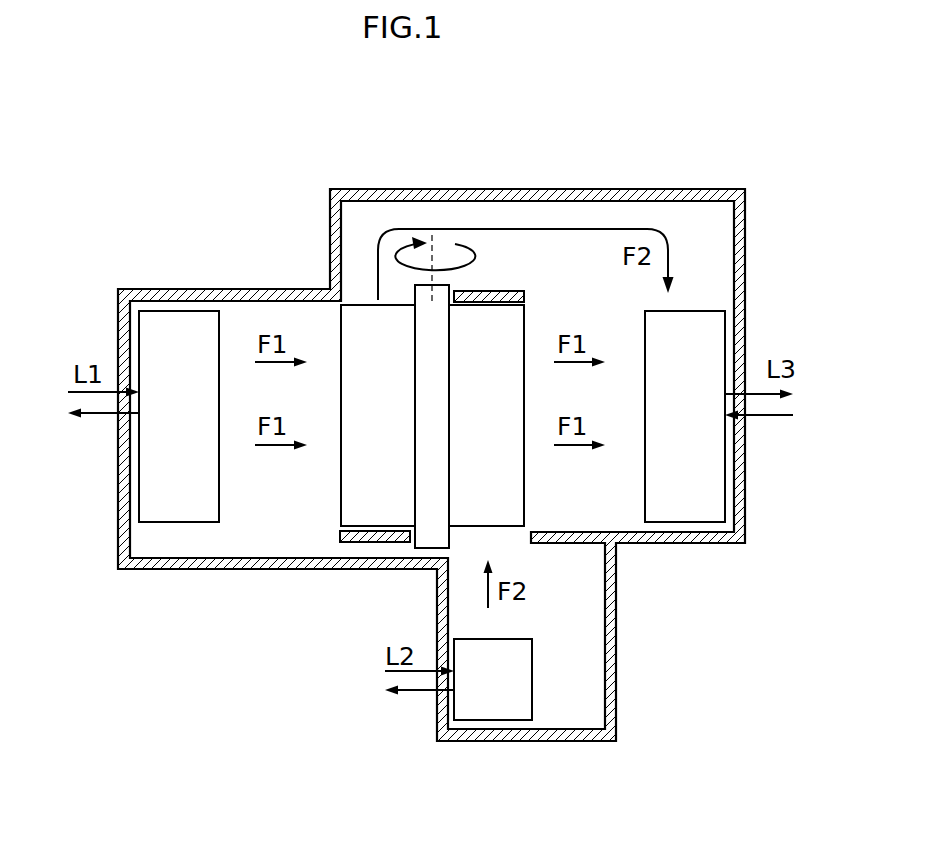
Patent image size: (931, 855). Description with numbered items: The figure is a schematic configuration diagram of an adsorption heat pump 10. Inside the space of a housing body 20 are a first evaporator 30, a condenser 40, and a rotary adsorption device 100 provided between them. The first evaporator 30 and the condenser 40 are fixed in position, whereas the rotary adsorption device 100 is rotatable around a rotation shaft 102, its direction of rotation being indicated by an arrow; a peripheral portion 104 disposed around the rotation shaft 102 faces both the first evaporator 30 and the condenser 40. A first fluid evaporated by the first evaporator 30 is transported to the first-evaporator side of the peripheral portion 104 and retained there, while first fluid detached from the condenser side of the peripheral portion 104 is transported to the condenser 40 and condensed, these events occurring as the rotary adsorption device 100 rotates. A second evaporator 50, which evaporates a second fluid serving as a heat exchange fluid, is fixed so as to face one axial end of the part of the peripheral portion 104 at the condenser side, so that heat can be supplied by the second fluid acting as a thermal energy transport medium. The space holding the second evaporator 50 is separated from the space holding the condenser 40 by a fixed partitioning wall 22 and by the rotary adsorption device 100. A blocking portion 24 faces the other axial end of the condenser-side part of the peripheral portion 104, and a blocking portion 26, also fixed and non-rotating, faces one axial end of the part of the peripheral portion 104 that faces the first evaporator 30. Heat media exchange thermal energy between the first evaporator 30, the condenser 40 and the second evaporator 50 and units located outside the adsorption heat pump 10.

The adsorption heat pump 10 is at (745, 110).
The housing body 20 is at (668, 197).
The partitioning wall 22 is at (575, 543).
The blocking portion 24 is at (513, 297).
The blocking portion 26 is at (342, 536).
The first evaporator 30 is at (179, 323).
The condenser 40 is at (710, 342).
The second evaporator 50 is at (487, 707).
The rotary adsorption device 100 is at (545, 328).
The rotation shaft 102 is at (430, 540).
The peripheral portion 104 is at (355, 493).